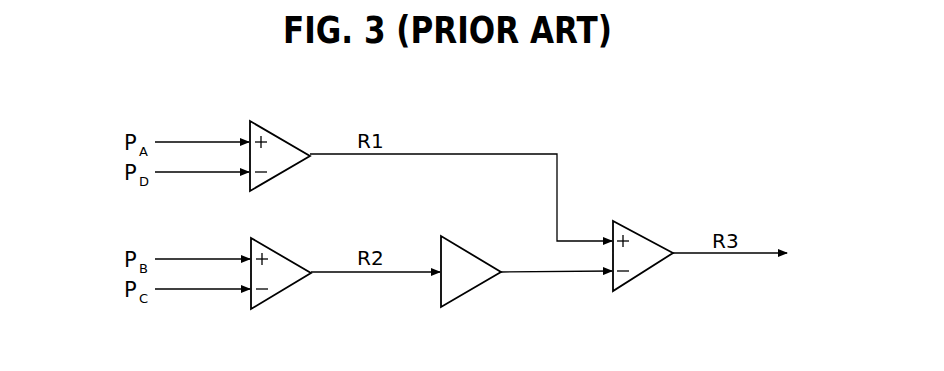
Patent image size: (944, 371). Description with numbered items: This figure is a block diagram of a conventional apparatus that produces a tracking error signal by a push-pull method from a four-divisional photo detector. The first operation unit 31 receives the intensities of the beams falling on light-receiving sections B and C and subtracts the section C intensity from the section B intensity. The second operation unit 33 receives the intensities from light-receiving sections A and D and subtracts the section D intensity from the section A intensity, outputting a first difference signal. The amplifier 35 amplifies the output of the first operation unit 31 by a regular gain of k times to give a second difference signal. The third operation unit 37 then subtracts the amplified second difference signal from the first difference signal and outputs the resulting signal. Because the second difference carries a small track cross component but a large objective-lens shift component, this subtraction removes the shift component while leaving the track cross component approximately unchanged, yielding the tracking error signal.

The first operation unit 31 is at (284, 254).
The second operation unit 33 is at (283, 137).
The amplifier 35 is at (480, 253).
The third operation unit 37 is at (648, 236).